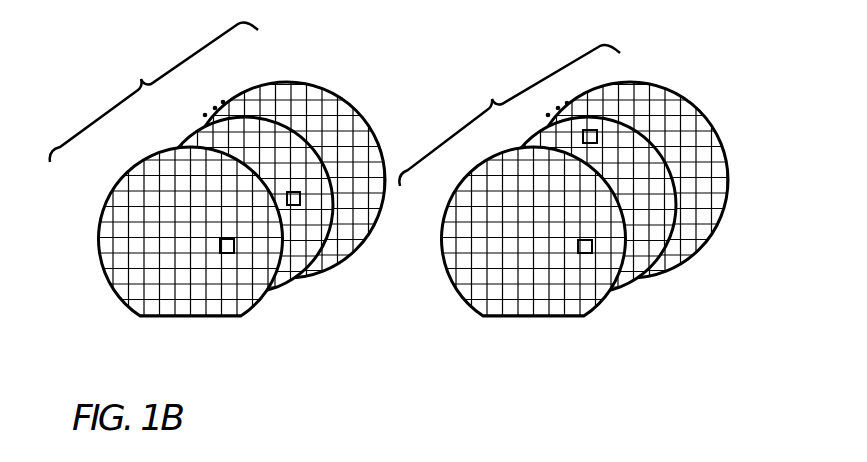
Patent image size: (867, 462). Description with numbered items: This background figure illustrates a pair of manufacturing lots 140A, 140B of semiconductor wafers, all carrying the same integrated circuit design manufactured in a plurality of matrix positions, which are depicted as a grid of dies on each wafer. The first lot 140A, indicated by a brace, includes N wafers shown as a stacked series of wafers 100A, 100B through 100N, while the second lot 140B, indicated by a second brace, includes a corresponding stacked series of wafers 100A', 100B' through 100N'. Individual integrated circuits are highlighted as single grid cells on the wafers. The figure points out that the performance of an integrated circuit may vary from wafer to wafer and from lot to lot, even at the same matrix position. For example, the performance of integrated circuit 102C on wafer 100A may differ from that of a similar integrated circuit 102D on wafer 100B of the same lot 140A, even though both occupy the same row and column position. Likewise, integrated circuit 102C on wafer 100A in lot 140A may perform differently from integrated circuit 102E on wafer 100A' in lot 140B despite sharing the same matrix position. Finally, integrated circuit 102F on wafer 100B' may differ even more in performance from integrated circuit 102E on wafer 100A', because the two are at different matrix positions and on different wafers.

The wafer 100A is at (194, 253).
The wafer 100B is at (265, 220).
The wafer 100N is at (307, 168).
The integrated circuit 102C is at (234, 245).
The integrated circuit 102D is at (300, 198).
The manufacturing lot 140A is at (154, 92).
The wafer 100A' is at (565, 258).
The wafer 100B' is at (618, 225).
The wafer 100N' is at (650, 177).
The integrated circuit 102E is at (582, 253).
The integrated circuit 102F is at (583, 142).
The manufacturing lot 140B is at (509, 115).